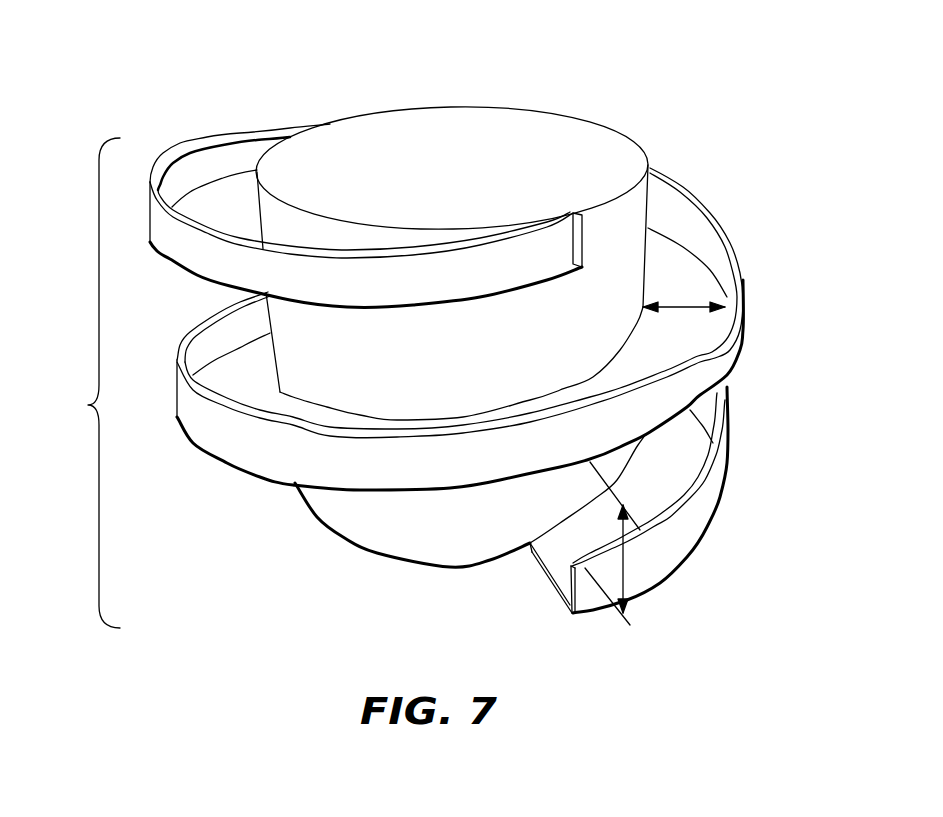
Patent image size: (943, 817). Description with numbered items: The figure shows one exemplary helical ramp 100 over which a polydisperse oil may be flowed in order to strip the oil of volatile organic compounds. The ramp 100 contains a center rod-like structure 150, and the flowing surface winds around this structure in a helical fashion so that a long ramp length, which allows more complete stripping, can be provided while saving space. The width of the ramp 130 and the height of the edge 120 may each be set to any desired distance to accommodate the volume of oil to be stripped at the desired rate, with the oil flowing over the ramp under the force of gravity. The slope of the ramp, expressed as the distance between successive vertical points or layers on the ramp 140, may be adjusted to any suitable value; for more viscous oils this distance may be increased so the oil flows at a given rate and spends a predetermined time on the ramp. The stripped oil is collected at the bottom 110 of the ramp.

The helical ramp 100 is at (92, 405).
The bottom of the ramp 110 is at (545, 568).
The edge 120 is at (175, 390).
The width of the ramp 130 is at (683, 307).
The distance between successive vertical points on the ramp 140 is at (627, 565).
The center rod-like structure 150 is at (472, 105).